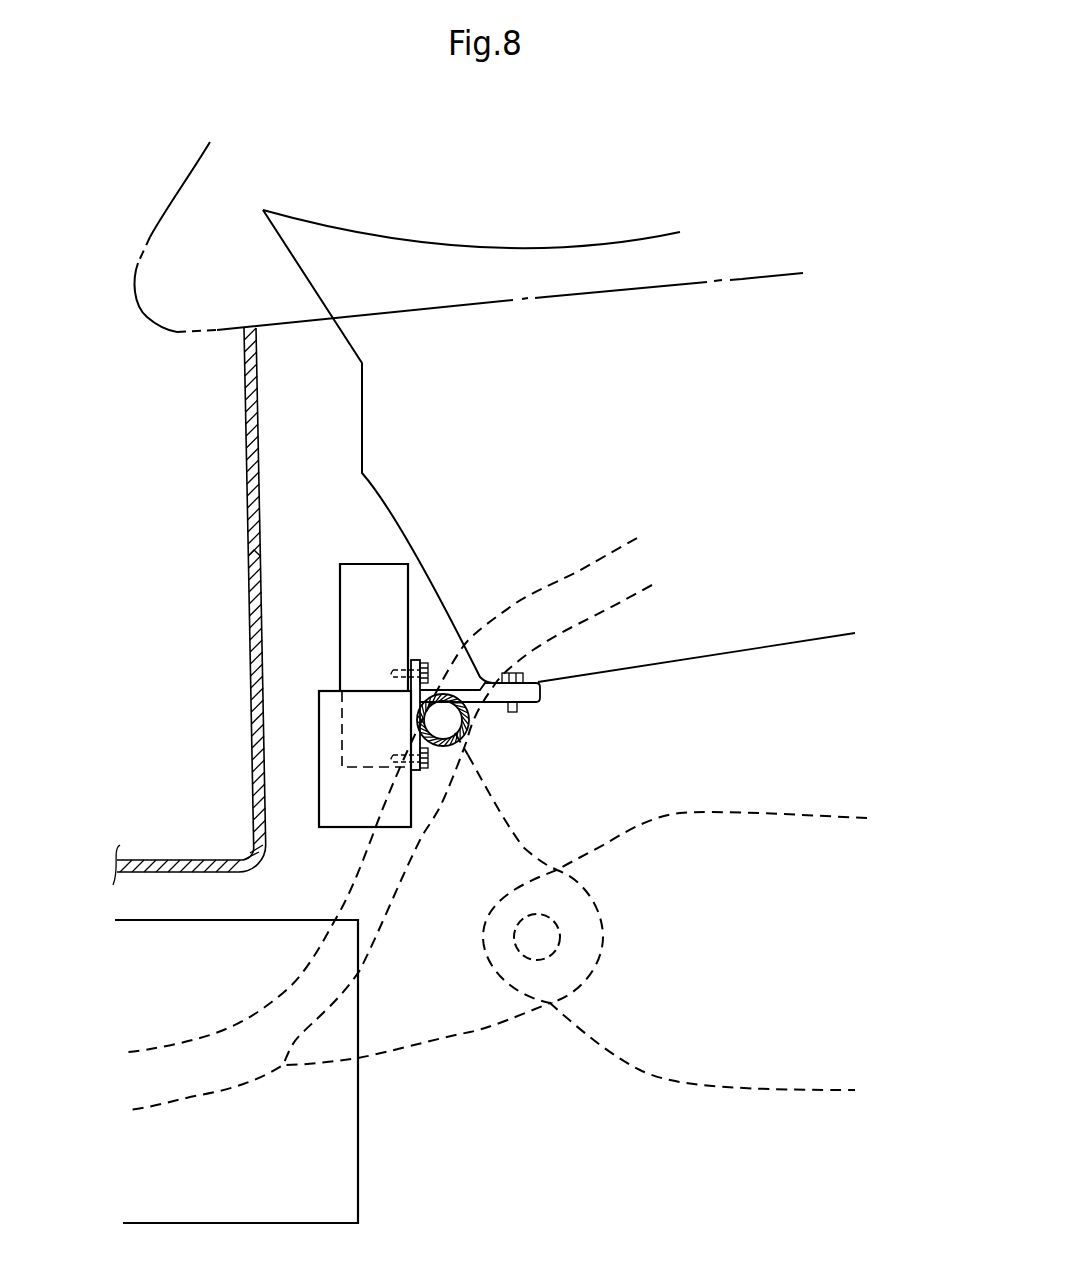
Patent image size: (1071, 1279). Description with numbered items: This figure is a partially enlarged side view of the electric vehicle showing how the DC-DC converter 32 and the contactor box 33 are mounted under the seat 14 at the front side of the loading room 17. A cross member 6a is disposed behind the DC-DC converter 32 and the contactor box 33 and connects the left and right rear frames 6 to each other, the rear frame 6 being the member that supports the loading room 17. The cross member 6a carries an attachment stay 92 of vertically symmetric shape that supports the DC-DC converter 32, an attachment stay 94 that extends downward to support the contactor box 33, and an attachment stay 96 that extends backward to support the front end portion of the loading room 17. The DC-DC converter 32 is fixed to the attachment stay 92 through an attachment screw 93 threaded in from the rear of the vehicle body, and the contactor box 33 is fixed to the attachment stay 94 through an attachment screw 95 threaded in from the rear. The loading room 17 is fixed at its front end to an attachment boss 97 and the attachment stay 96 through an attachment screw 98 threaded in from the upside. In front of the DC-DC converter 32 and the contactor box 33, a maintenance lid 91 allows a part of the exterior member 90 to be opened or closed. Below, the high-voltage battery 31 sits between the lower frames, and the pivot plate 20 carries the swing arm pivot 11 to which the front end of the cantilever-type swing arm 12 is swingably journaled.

The rear frame 6 is at (602, 553).
The cross member 6a is at (452, 740).
The swing arm pivot 11 is at (562, 935).
The swing arm 12 is at (645, 1072).
The seat 14 is at (138, 302).
The loading room 17 is at (383, 503).
The pivot plate 20 is at (430, 1043).
The high-voltage battery 31 is at (360, 1185).
The DC-DC converter 32 is at (347, 615).
The contactor box 33 is at (336, 791).
The exterior member 90 is at (243, 430).
The maintenance lid 91 is at (254, 679).
The attachment stay 92 is at (413, 662).
The attachment screw 93 is at (430, 672).
The attachment stay 94 is at (480, 718).
The attachment screw 95 is at (430, 755).
The attachment stay 96 is at (528, 703).
The attachment boss 97 is at (540, 690).
The attachment screw 98 is at (508, 678).